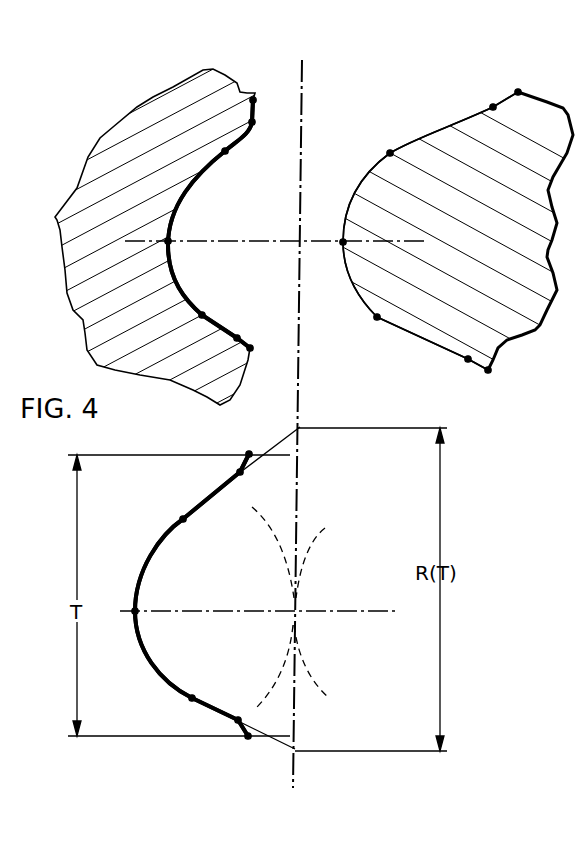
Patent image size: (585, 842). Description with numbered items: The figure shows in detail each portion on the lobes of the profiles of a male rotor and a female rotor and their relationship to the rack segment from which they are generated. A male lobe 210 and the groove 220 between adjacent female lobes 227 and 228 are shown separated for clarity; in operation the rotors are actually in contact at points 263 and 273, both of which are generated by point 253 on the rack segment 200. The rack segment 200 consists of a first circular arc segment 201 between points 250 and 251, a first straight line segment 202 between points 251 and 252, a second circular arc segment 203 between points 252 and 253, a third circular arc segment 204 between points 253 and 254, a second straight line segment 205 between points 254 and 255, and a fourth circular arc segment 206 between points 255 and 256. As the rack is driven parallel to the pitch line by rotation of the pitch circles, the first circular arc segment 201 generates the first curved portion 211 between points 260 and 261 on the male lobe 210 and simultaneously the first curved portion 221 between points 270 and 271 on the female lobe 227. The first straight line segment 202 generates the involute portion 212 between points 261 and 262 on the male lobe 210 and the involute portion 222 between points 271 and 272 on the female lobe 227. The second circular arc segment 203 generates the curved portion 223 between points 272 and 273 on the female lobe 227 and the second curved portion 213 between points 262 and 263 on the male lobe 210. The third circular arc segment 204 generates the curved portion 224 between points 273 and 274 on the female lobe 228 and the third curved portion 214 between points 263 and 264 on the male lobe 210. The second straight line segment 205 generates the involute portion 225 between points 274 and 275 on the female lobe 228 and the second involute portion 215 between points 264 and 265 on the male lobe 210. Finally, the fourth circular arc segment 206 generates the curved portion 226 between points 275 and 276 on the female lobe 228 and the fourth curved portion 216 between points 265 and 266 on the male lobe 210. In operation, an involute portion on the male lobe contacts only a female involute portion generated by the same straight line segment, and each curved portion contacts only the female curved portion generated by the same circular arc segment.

The rack segment 200 is at (166, 690).
The first circular arc segment 201 is at (243, 726).
The first straight line segment 202 is at (218, 712).
The second circular arc segment 203 is at (151, 660).
The third circular arc segment 204 is at (153, 550).
The second straight line segment 205 is at (215, 492).
The fourth circular arc segment 206 is at (243, 463).
The male lobe 210 is at (424, 205).
The first curved portion 211 is at (478, 367).
The involute portion 212 is at (411, 341).
The second curved portion 213 is at (355, 292).
The third curved portion 214 is at (361, 191).
The second involute portion 215 is at (430, 128).
The fourth curved portion 216 is at (503, 101).
The groove 220 is at (247, 273).
The first curved portion 221 is at (241, 351).
The involute portion 222 is at (218, 329).
The curved portion 223 is at (171, 268).
The curved portion 224 is at (176, 208).
The involute portion 225 is at (246, 133).
The curved portion 226 is at (250, 108).
The female lobe 227 is at (170, 324).
The female lobe 228 is at (171, 169).
The point 250 is at (248, 739).
The point 251 is at (238, 718).
The point 252 is at (193, 696).
The point 253 is at (137, 609).
The point 254 is at (184, 521).
The point 255 is at (242, 474).
The point 256 is at (250, 452).
The point 260 is at (490, 369).
The point 261 is at (469, 357).
The point 262 is at (379, 316).
The point 263 is at (344, 240).
The point 264 is at (392, 153).
The point 265 is at (495, 109).
The point 266 is at (520, 91).
The point 270 is at (251, 350).
The point 271 is at (248, 327).
The point 272 is at (203, 313).
The point 273 is at (169, 239).
The point 274 is at (226, 153).
The point 275 is at (253, 124).
The point 276 is at (253, 99).